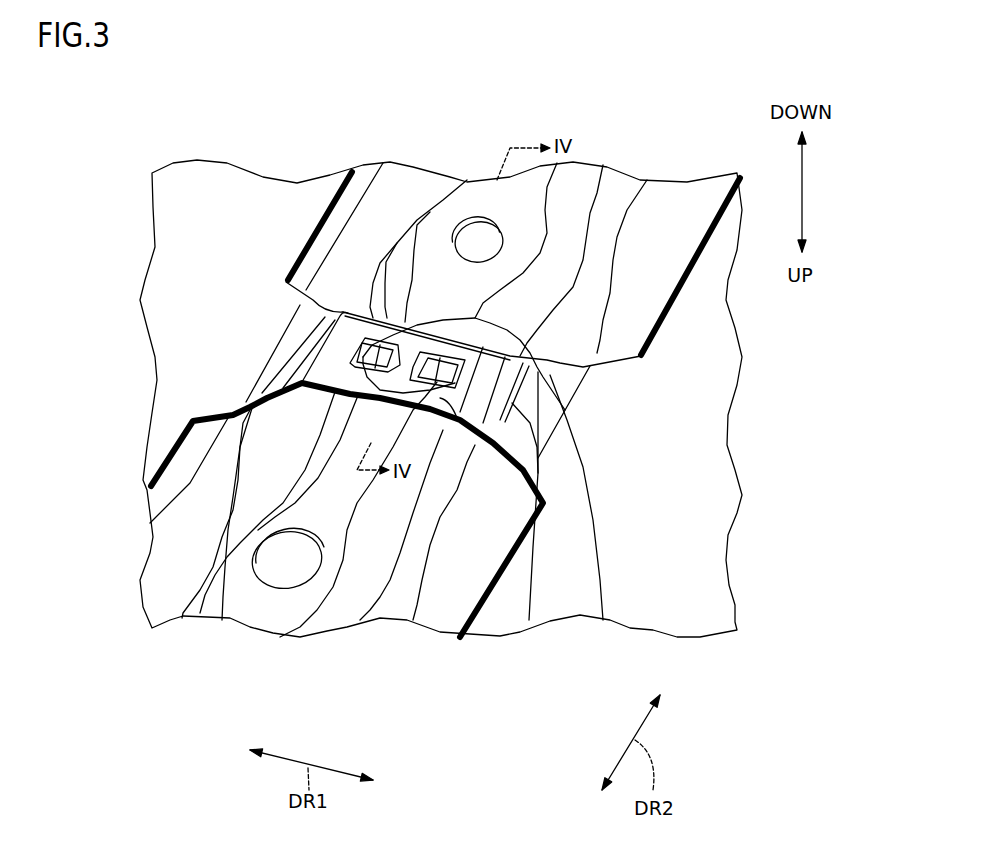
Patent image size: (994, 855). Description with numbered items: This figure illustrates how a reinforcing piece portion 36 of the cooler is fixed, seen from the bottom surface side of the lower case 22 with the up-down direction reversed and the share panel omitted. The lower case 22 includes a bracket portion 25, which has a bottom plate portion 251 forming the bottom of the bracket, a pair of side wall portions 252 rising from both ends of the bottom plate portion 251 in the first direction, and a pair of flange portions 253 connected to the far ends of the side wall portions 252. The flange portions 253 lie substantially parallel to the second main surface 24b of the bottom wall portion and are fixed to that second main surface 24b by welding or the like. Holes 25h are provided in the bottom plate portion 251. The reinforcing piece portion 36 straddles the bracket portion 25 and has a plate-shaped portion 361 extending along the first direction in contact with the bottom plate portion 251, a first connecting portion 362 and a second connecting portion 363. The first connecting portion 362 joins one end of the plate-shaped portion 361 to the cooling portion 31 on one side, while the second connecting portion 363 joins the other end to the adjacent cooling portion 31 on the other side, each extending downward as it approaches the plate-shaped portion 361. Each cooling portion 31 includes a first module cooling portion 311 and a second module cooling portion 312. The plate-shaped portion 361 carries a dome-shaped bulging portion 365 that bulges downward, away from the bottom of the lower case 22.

The cooling portion 31 is at (442, 398).
The first module cooling portion 311 is at (683, 524).
The second module cooling portion 312 is at (152, 287).
The lower case 22 is at (513, 189).
The second main surface 24b is at (301, 262).
The bracket portion 25 is at (502, 214).
The hole 25h is at (456, 228).
The bottom plate portion 251 is at (427, 235).
The side wall portion 252 is at (378, 263).
The flange portion 253 is at (338, 270).
The reinforcing piece portion 36 is at (386, 504).
The plate-shaped portion 361 is at (460, 420).
The first connecting portion 362 is at (251, 405).
The second connecting portion 363 is at (529, 620).
The bulging portion 365 is at (603, 620).